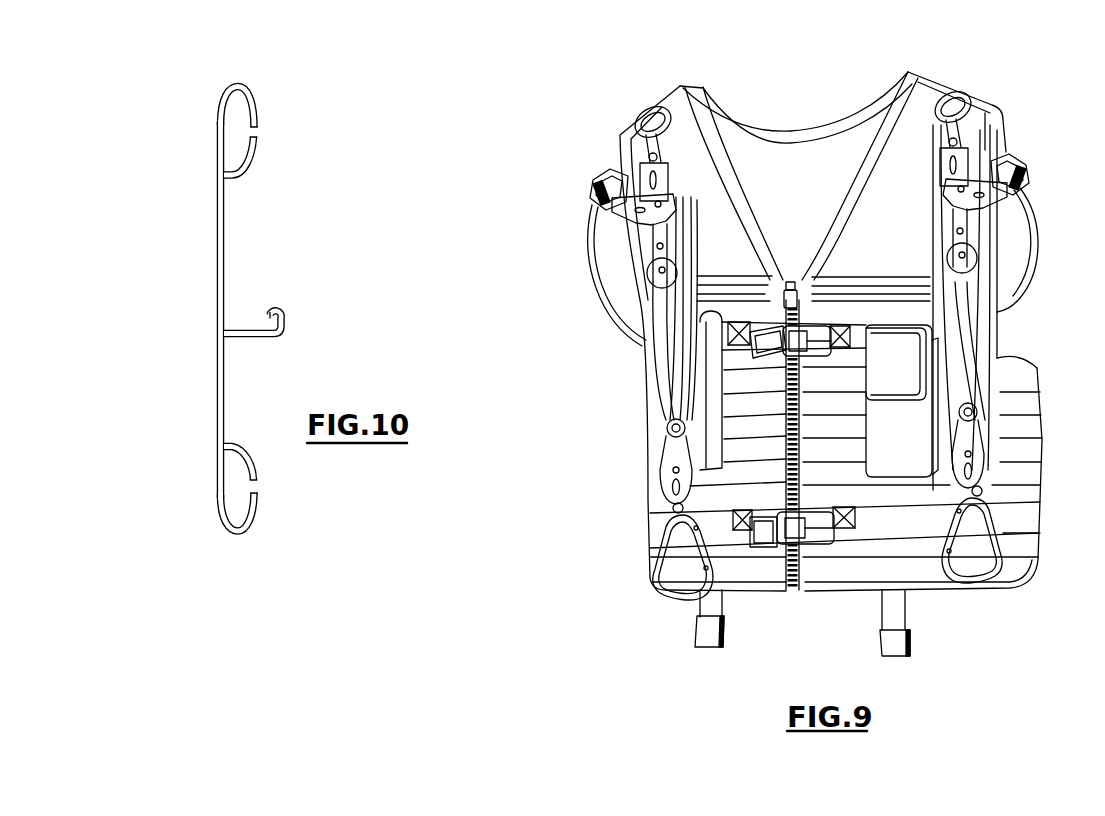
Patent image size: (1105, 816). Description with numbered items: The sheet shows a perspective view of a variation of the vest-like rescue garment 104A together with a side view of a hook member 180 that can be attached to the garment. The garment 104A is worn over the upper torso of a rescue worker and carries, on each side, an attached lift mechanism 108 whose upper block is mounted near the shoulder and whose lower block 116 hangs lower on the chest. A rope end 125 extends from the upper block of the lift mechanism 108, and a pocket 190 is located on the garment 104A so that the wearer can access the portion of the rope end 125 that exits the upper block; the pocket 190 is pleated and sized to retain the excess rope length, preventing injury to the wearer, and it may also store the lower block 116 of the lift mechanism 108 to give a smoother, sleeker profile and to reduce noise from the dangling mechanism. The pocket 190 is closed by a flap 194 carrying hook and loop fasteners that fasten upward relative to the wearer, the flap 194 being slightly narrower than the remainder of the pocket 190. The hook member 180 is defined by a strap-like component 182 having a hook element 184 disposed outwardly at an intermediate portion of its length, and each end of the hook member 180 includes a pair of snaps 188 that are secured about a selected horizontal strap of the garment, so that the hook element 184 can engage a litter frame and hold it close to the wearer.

In FIG. 10, the hook member 180 is at (192, 255).
In FIG. 10, the strap-like component 182 is at (225, 260).
In FIG. 10, the hook element 184 is at (290, 320).
In FIG. 10, the snaps 188 is at (257, 148).
In FIG. 9, the garment 104A is at (913, 138).
In FIG. 9, the lift mechanism 108 is at (632, 263).
In FIG. 9, the rope end 125 is at (1021, 297).
In FIG. 9, the flap 194 is at (897, 363).
In FIG. 9, the pocket 190 is at (980, 401).
In FIG. 9, the lower block 116 is at (990, 468).